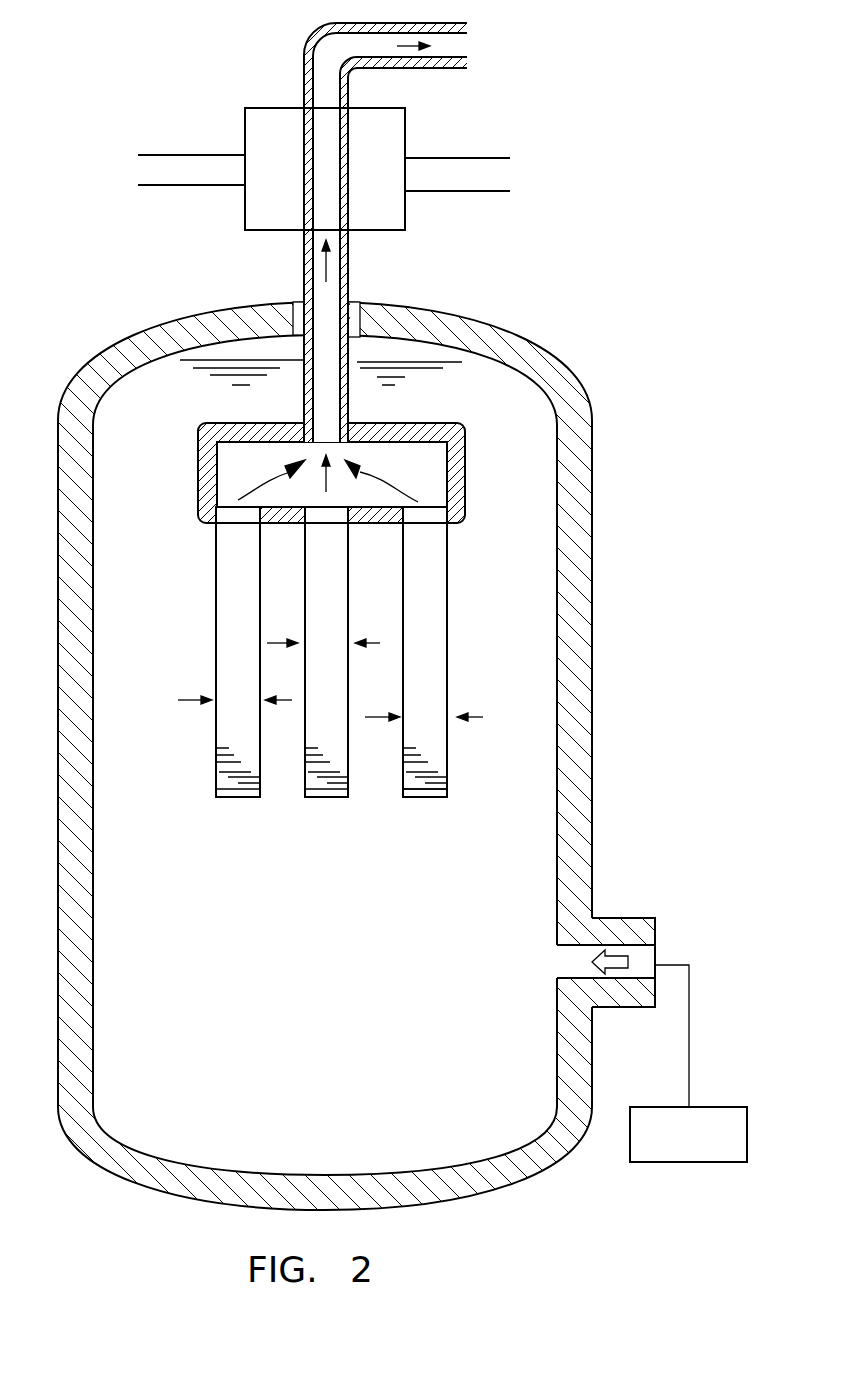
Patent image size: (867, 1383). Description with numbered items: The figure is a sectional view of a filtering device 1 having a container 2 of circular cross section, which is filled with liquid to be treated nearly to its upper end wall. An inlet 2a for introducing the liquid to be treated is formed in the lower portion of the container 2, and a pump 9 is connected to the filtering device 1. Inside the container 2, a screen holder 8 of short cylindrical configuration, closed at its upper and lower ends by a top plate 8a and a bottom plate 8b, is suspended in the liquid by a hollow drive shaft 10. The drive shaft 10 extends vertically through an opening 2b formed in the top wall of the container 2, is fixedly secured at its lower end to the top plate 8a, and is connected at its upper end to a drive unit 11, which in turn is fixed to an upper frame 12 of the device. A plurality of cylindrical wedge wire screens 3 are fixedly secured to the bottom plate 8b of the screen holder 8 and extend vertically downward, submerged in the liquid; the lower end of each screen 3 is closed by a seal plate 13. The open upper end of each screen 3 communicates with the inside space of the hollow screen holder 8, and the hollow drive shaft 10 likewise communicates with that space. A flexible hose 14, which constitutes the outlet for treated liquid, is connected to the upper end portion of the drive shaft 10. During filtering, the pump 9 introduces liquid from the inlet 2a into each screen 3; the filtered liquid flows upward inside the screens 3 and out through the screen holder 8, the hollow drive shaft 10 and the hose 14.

The filtering device 1 is at (556, 269).
The container 2 is at (582, 445).
The inlet 2a is at (625, 932).
The opening 2b is at (357, 300).
The cylindrical wedge wire screen 3 is at (428, 658).
The screen holder 8 is at (433, 295).
The top plate 8a is at (398, 423).
The bottom plate 8b is at (373, 523).
The pump 9 is at (718, 1107).
The hollow drive shaft 10 is at (303, 353).
The drive unit 11 is at (392, 147).
The upper frame 12 is at (178, 173).
The seal plate 13 is at (427, 797).
The flexible hose 14 is at (307, 20).